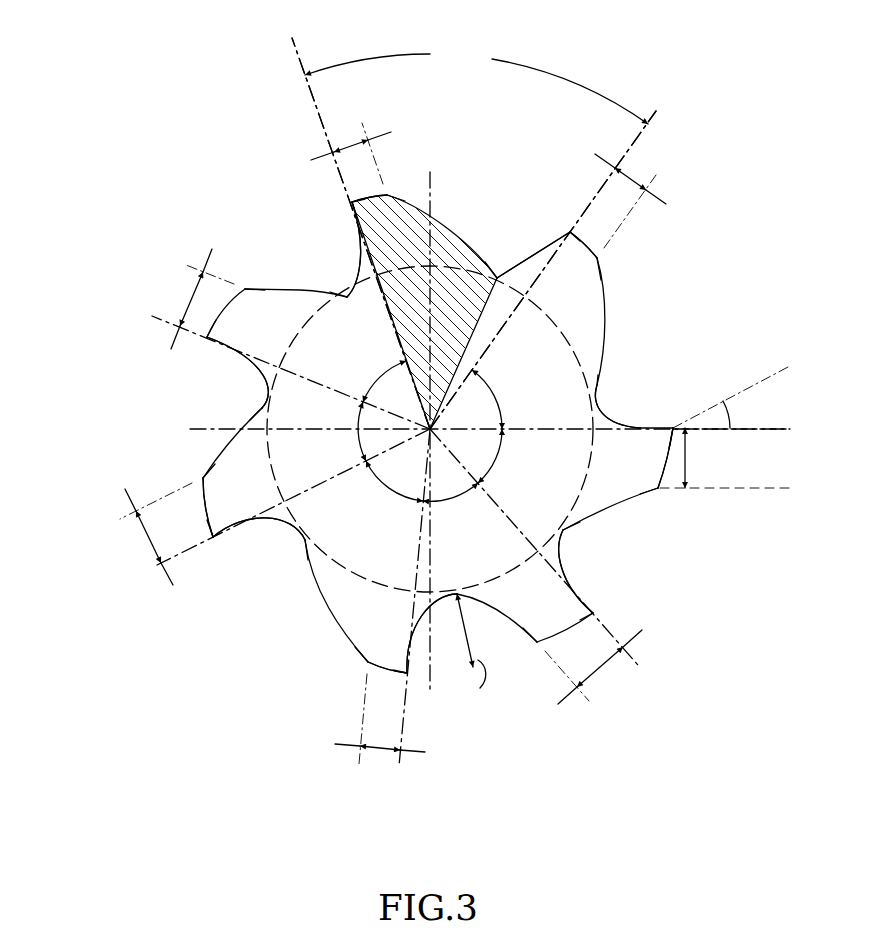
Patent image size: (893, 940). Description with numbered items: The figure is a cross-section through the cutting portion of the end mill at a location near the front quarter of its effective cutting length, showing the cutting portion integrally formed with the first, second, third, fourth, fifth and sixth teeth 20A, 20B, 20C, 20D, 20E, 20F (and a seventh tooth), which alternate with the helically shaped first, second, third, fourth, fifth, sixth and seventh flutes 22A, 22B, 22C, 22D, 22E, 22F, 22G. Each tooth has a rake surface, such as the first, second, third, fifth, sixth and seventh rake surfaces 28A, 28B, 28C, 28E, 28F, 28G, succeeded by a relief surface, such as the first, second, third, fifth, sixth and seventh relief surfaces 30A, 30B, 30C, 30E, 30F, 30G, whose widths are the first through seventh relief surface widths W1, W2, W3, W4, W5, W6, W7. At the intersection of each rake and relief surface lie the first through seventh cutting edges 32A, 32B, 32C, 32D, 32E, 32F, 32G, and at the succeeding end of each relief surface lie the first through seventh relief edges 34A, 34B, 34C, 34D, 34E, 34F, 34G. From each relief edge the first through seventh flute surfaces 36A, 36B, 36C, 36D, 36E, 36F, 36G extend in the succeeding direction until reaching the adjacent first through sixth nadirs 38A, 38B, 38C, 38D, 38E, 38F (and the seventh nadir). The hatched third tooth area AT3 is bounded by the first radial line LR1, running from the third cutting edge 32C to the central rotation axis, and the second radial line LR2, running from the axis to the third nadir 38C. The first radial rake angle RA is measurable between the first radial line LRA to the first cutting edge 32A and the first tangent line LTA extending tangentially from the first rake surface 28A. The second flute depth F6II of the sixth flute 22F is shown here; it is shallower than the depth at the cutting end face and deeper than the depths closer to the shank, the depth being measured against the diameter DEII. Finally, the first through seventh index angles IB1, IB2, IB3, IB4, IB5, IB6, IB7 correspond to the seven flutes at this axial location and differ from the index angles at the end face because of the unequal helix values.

The first tooth 20A is at (716, 500).
The second tooth 20B is at (703, 190).
The third tooth 20C is at (457, 200).
The fourth tooth 20D is at (182, 211).
The fifth tooth 20E is at (135, 468).
The sixth tooth 20F is at (320, 694).
The first flute 22A is at (662, 417).
The second flute 22B is at (523, 251).
The third flute 22C is at (339, 284).
The fourth flute 22D is at (246, 397).
The fifth flute 22E is at (293, 569).
The sixth flute 22F is at (455, 651).
The seventh flute 22G is at (606, 561).
The first rake surface 28A is at (640, 432).
The second rake surface 28B is at (542, 252).
The third rake surface 28C is at (360, 280).
The fifth rake surface 28E is at (258, 518).
The sixth rake surface 28F is at (414, 624).
The seventh rake surface 28G is at (576, 583).
The first relief surface 30A is at (661, 476).
The second relief surface 30B is at (584, 246).
The third relief surface 30C is at (369, 197).
The fifth relief surface 30E is at (240, 494).
The sixth relief surface 30F is at (386, 666).
The seventh relief surface 30G is at (565, 625).
The first cutting edge 32A is at (673, 428).
The second cutting edge 32B is at (571, 230).
The third cutting edge 32C is at (351, 203).
The fourth cutting edge 32D is at (207, 337).
The fifth cutting edge 32E is at (214, 540).
The sixth cutting edge 32F is at (408, 674).
The seventh cutting edge 32G is at (595, 613).
The first relief edge 34A is at (661, 496).
The second relief edge 34B is at (598, 259).
The third relief edge 34C is at (389, 197).
The fourth relief edge 34D is at (245, 289).
The fifth relief edge 34E is at (203, 478).
The sixth relief edge 34F is at (367, 663).
The seventh relief edge 34G is at (540, 640).
The first flute surface 36A is at (627, 507).
The second flute surface 36B is at (603, 303).
The third flute surface 36C is at (474, 236).
The fourth flute surface 36D is at (274, 289).
The fifth flute surface 36E is at (230, 443).
The sixth flute surface 36F is at (332, 612).
The seventh flute surface 36G is at (522, 630).
The first nadir 38A is at (561, 530).
The second nadir 38B is at (604, 396).
The third nadir 38C is at (507, 276).
The fourth nadir 38D is at (352, 298).
The fifth nadir 38E is at (272, 390).
The sixth nadir 38F is at (305, 530).
The first index angle IB1 is at (507, 399).
The second index angle IB2 is at (476, 86).
The third index angle IB3 is at (373, 378).
The fourth index angle IB4 is at (338, 435).
The fifth index angle IB5 is at (386, 492).
The sixth index angle IB6 is at (453, 508).
The seventh index angle IB7 is at (509, 456).
The first relief surface width W1 is at (704, 458).
The second relief surface width W2 is at (630, 196).
The third relief surface width W3 is at (351, 144).
The fourth relief surface width W4 is at (192, 299).
The fifth relief surface width W5 is at (150, 534).
The sixth relief surface width W6 is at (380, 736).
The seventh relief surface width W7 is at (593, 667).
The first radial line LR1 is at (344, 224).
The second radial line LR2 is at (500, 327).
The first tangent line LTA is at (788, 366).
The first radial line LRA is at (780, 430).
The first radial rake angle RA is at (743, 408).
The third tooth area AT3 is at (420, 251).
The flute depth E DEII is at (495, 662).
The second flute depth F6II is at (478, 660).